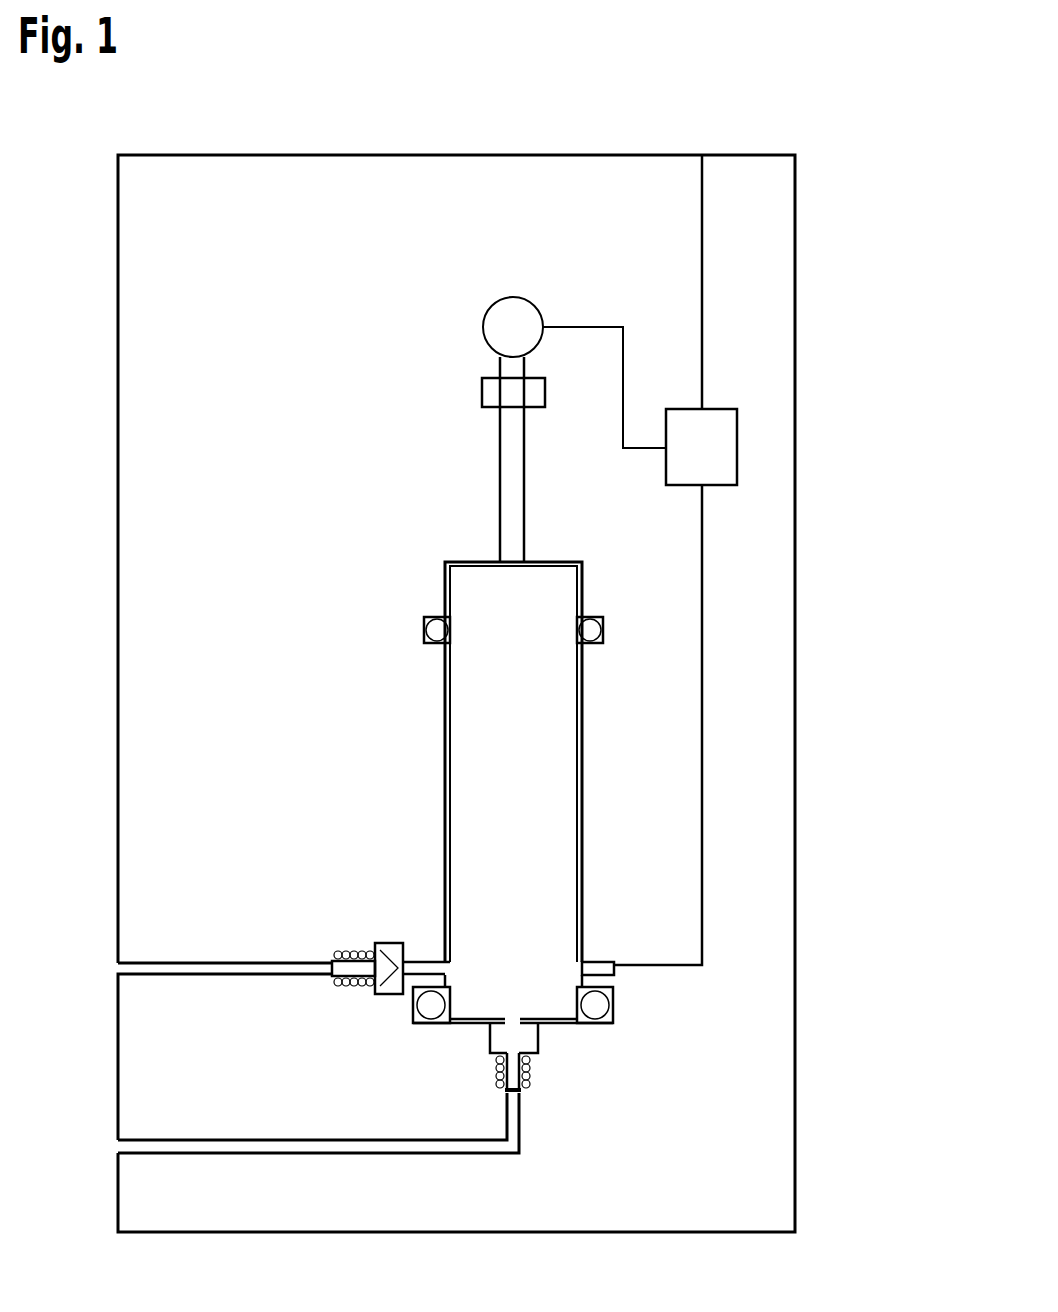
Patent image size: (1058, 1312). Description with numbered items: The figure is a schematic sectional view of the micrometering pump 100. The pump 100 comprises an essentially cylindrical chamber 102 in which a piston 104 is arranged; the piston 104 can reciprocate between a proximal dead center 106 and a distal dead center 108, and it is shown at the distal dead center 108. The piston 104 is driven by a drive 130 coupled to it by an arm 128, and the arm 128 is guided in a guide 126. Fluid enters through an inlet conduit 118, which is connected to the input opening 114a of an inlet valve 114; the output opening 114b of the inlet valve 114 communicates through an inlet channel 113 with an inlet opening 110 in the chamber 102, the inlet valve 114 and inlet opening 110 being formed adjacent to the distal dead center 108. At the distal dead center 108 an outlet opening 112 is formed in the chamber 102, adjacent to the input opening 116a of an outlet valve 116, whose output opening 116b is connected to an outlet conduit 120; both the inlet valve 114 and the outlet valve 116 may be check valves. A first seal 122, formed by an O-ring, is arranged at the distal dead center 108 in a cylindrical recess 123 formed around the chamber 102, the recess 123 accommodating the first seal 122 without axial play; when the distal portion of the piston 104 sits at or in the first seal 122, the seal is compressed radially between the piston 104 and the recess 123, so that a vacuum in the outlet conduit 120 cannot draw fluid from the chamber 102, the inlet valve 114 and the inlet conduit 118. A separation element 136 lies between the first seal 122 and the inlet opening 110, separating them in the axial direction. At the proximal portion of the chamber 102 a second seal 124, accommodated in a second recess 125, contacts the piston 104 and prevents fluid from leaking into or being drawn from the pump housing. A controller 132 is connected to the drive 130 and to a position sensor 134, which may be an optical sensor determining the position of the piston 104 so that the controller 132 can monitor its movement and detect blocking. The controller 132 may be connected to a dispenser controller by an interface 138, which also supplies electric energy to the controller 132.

The micrometering pump 100 is at (828, 258).
The cylindrical chamber 102 is at (583, 742).
The piston 104 is at (467, 727).
The proximal dead center 106 is at (408, 626).
The distal dead center 108 is at (651, 1037).
The inlet opening 110 is at (436, 965).
The outlet opening 112 is at (536, 1028).
The inlet channel 113 is at (418, 968).
The inlet valve 114 is at (331, 958).
The input opening of the inlet valve 114a is at (333, 958).
The output opening of the inlet valve 114b is at (362, 995).
The outlet valve 116 is at (488, 1092).
The input opening of the outlet valve 116a is at (496, 1015).
The output opening of the outlet valve 116b is at (492, 1083).
The inlet conduit 118 is at (158, 960).
The outlet conduit 120 is at (158, 1146).
The first seal 122 is at (593, 1012).
The recess 123 is at (618, 993).
The second seal 124 is at (594, 632).
The second recess 125 is at (606, 620).
The guide 126 is at (490, 393).
The arm 128 is at (512, 462).
The drive 130 is at (485, 327).
The controller 132 is at (737, 445).
The position sensor 134 is at (600, 962).
The separation element 136 is at (420, 988).
The interface 138 is at (710, 165).